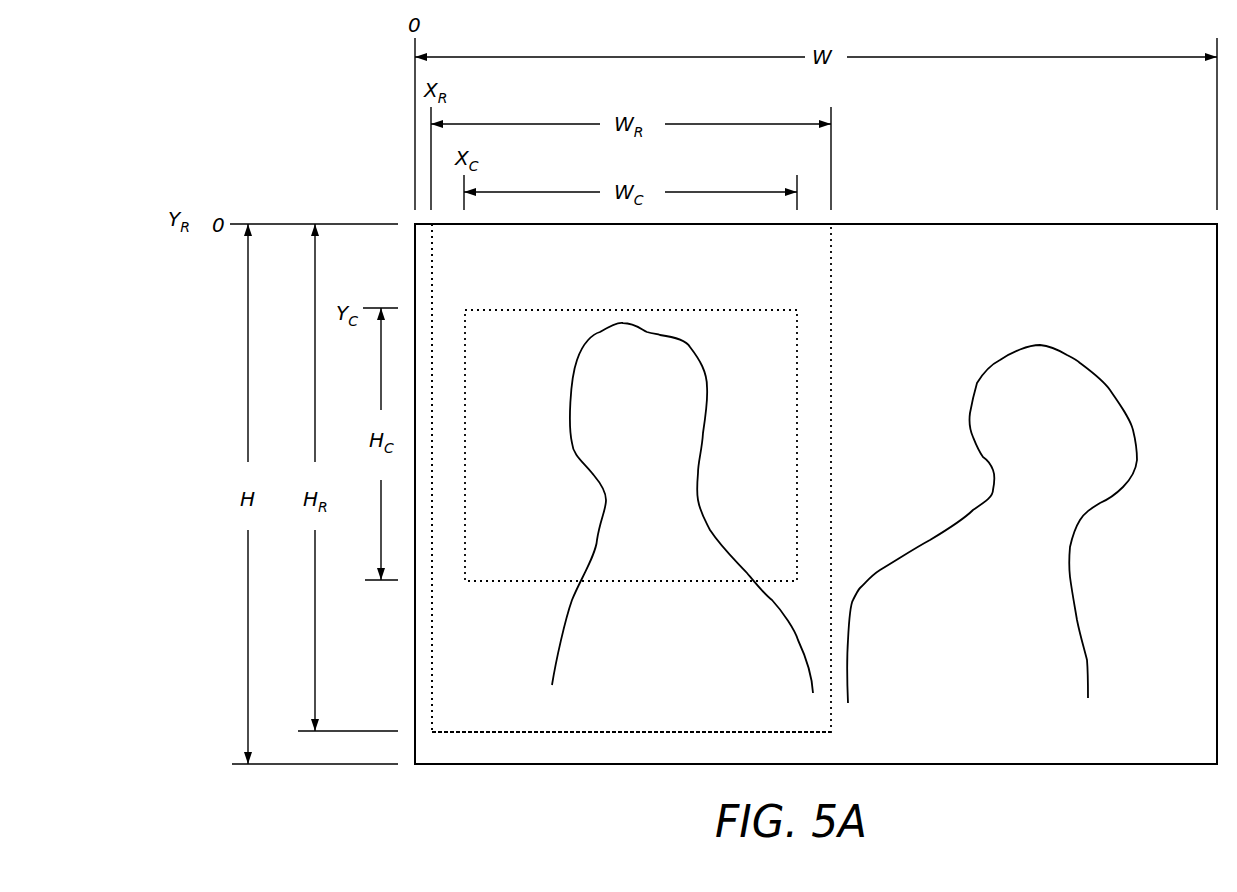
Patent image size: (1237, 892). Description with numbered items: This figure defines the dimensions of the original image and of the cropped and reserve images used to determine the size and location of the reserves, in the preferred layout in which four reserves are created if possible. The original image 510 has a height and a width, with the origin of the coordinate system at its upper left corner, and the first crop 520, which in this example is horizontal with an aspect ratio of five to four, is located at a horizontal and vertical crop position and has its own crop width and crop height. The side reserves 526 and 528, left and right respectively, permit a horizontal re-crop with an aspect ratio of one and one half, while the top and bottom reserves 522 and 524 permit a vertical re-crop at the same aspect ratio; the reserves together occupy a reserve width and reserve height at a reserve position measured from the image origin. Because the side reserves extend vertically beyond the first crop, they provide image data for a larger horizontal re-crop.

The image frame 510 is at (1033, 240).
The subject figure 520 is at (763, 395).
The top reserve 522 is at (780, 252).
The bottom reserve 524 is at (665, 720).
The left side reserve 526 is at (448, 715).
The right side reserve 528 is at (815, 327).